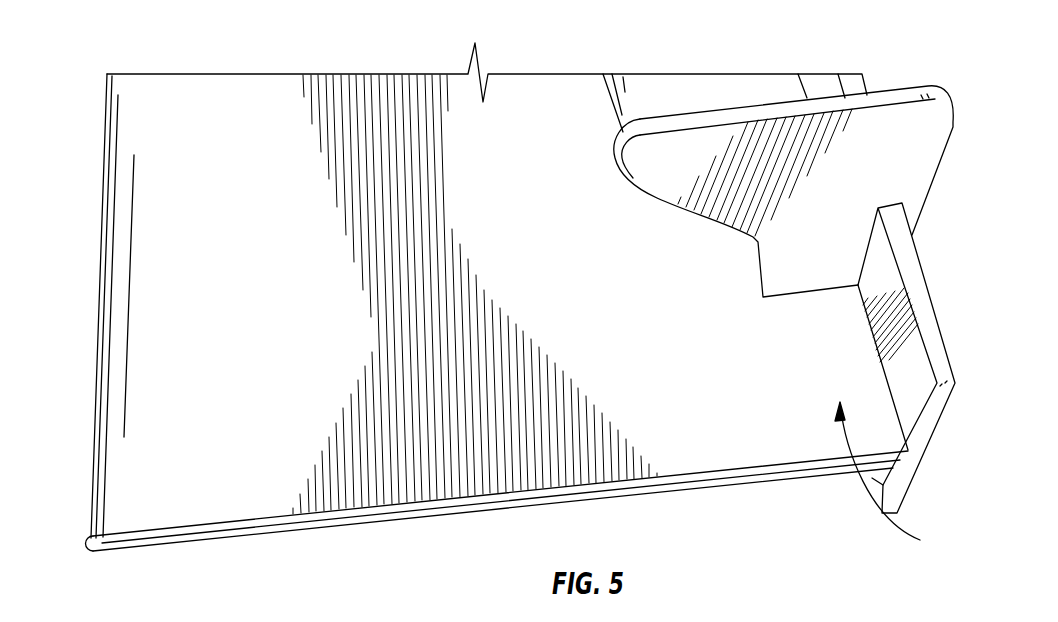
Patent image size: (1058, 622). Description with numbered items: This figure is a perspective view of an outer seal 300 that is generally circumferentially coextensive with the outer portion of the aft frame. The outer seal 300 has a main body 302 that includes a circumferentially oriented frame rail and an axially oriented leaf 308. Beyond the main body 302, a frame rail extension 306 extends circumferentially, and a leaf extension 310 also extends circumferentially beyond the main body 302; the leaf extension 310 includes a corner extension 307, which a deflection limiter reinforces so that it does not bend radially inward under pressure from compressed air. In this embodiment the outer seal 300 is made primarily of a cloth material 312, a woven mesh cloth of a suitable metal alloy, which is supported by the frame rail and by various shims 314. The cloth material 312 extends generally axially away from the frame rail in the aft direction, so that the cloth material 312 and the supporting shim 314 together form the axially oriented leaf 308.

The outer seal 300 is at (753, 528).
The main body 302 is at (852, 85).
The frame rail extension 306 is at (937, 298).
The corner extension 307 is at (920, 540).
The axially oriented leaf 308 is at (270, 112).
The leaf extension 310 is at (90, 365).
The cloth material 312 is at (252, 537).
The shim 314 is at (150, 540).